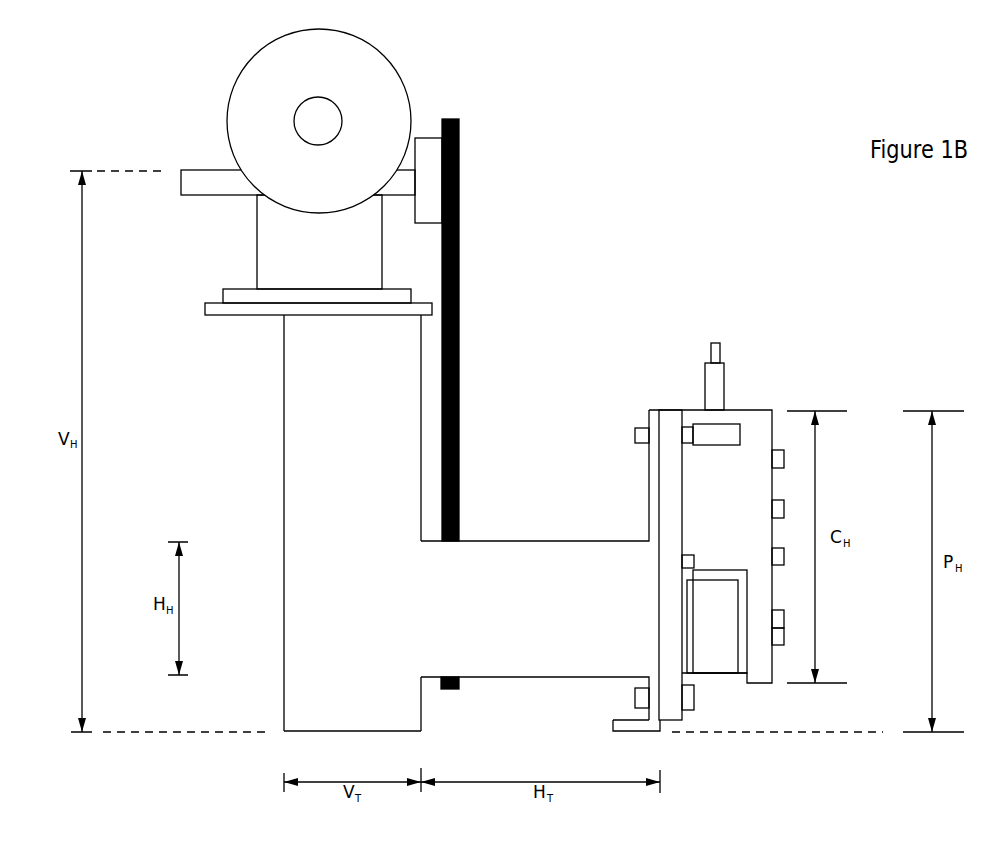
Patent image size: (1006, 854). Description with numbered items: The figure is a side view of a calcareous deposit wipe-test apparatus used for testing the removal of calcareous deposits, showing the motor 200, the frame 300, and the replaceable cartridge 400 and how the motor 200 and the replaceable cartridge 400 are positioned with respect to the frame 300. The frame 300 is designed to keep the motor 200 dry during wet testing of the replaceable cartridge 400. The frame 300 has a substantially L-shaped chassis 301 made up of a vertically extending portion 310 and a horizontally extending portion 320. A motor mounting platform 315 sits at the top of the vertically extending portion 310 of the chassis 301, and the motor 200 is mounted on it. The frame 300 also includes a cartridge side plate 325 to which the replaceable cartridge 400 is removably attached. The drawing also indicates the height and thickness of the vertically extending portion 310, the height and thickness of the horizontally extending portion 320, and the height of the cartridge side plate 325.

The motor 200 is at (255, 262).
The frame 300 is at (429, 461).
The substantially L-shaped chassis 301 is at (366, 689).
The vertically extending portion 310 is at (280, 322).
The motor mounting platform 315 is at (213, 305).
The horizontally extending portion 320 is at (647, 544).
The cartridge side plate 325 is at (653, 722).
The replaceable cartridge 400 is at (762, 442).